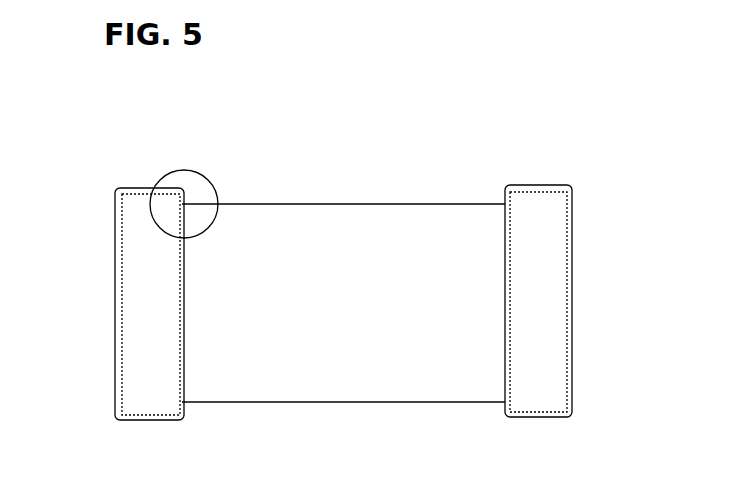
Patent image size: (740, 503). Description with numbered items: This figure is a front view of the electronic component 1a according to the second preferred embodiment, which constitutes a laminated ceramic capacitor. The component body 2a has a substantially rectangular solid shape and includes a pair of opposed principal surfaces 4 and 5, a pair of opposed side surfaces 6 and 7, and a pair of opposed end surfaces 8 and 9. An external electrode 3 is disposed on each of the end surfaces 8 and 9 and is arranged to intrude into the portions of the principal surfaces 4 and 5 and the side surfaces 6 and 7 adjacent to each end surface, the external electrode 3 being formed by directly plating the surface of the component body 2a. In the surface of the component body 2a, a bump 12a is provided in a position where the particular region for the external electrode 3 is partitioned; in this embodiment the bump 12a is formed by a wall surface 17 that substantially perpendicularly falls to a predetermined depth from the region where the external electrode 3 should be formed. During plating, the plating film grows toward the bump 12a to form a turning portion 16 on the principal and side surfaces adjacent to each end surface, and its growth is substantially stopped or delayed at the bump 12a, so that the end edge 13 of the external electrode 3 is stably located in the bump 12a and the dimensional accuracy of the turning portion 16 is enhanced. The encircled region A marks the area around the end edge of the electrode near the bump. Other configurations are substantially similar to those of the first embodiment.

The electronic component 1a is at (124, 100).
The component body 2a is at (338, 196).
The external electrode 3 is at (126, 426).
The principal surface 4 is at (398, 200).
The principal surface 5 is at (367, 403).
The side surface 6 is at (289, 247).
The side surface 7 is at (305, 378).
The end surface 8 is at (117, 312).
The end surface 9 is at (567, 313).
The bump 12a is at (174, 258).
The end edge 13 is at (184, 348).
The turning portion 16 is at (145, 376).
The wall surface 17 is at (184, 281).
The enlarged region A is at (163, 176).